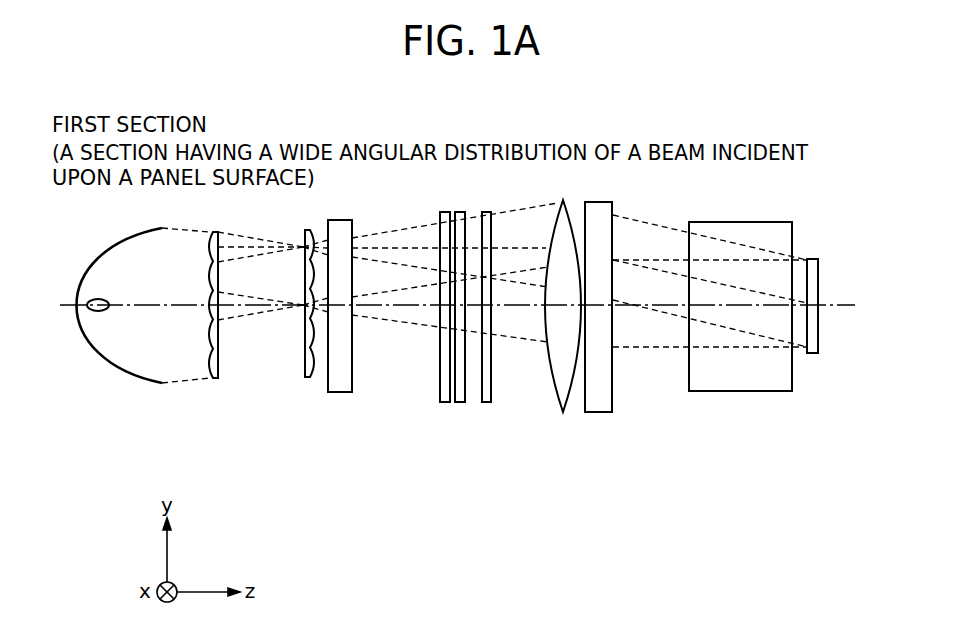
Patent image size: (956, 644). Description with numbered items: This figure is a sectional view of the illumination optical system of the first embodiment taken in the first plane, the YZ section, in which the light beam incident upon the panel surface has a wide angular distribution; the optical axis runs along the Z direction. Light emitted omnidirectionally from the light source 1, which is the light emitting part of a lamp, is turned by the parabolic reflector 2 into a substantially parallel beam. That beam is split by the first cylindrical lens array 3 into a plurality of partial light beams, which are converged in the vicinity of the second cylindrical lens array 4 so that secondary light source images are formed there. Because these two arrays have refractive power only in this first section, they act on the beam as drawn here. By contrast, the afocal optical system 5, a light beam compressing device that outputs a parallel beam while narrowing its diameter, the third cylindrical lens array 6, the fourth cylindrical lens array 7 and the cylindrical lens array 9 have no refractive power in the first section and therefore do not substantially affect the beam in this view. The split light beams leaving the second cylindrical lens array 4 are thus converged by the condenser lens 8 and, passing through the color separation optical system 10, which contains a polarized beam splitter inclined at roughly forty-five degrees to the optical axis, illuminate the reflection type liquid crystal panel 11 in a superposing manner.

The light source 1 is at (98, 311).
The parabolic reflector 2 is at (137, 380).
The first cylindrical lens array 3 is at (220, 380).
The second cylindrical lens array 4 is at (310, 380).
The afocal optical system 5 is at (340, 393).
The third cylindrical lens array 6 is at (460, 402).
The fourth cylindrical lens array 7 is at (488, 402).
The condenser lens 8 is at (562, 412).
The cylindrical lens array 9 is at (598, 412).
The color separation optical system 10 is at (727, 391).
The reflection type liquid crystal panel 11 is at (814, 353).